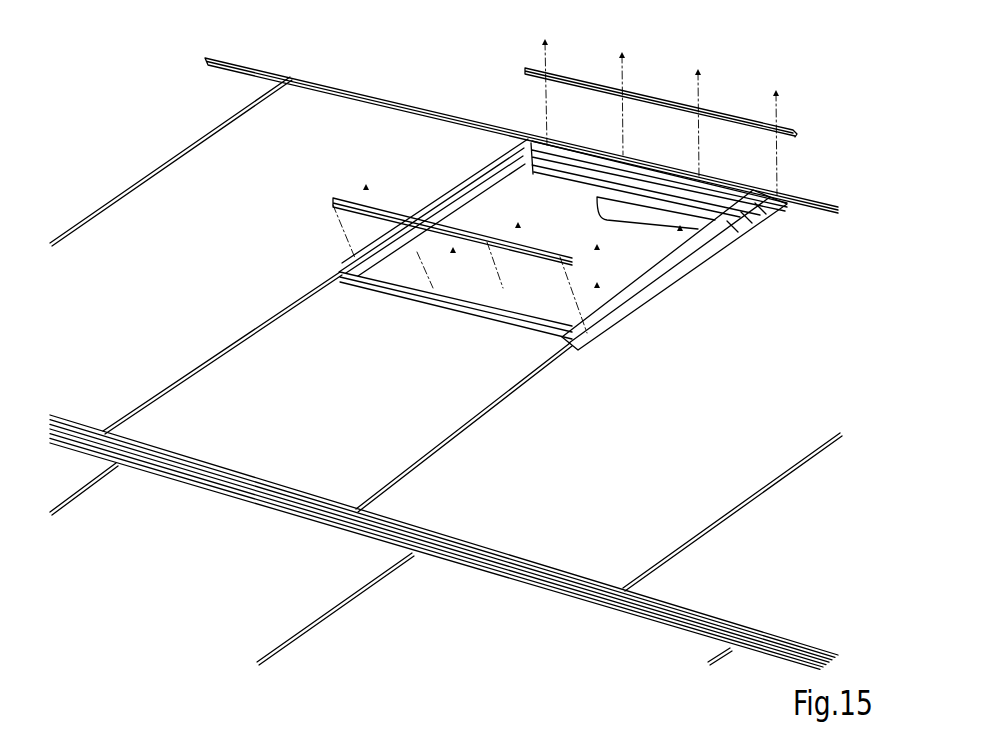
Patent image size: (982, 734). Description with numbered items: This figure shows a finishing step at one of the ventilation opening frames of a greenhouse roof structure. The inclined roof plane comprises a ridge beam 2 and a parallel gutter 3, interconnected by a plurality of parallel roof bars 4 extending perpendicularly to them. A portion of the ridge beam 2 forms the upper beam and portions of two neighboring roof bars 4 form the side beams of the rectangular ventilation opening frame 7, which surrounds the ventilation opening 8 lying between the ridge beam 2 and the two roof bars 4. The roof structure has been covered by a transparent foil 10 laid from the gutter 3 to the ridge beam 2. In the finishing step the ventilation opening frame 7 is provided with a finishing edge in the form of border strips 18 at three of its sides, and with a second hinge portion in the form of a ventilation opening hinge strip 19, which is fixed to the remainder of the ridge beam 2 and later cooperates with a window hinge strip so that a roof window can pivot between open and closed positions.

The ridge beam 2 is at (396, 99).
The gutter 3 is at (644, 603).
The roof bar 4 is at (602, 338).
The ventilation opening frame 7 is at (725, 261).
The ventilation opening 8 is at (569, 226).
The transparent foil 10 is at (208, 173).
The border strips 18 is at (636, 268).
The ventilation opening hinge strip 19 is at (390, 214).